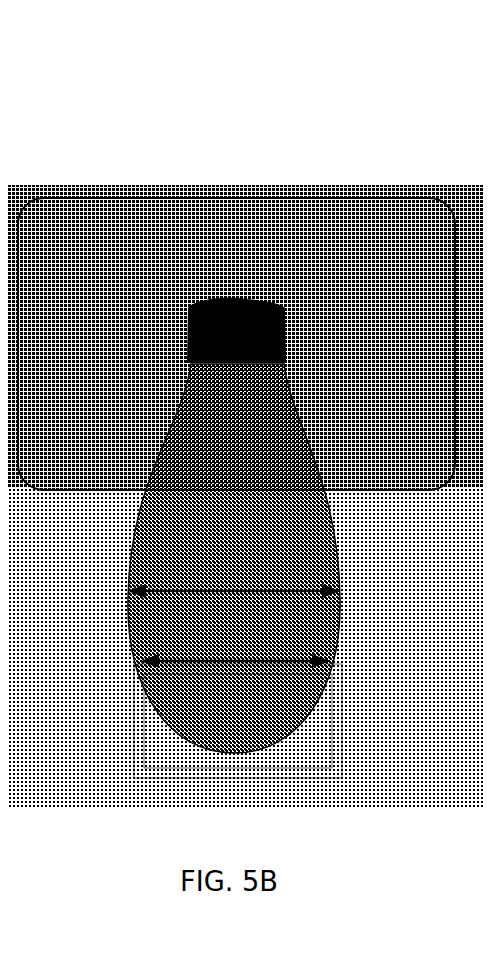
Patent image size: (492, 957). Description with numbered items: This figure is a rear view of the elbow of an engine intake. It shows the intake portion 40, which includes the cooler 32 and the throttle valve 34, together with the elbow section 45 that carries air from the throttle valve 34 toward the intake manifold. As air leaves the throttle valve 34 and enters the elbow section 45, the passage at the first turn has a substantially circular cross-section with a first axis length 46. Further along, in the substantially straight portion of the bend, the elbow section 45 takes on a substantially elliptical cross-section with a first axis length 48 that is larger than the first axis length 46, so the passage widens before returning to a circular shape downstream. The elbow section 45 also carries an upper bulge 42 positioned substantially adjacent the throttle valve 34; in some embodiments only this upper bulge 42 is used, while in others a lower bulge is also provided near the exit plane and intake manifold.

The intake portion 40 is at (273, 178).
The cooler 32 is at (405, 223).
The throttle valve 34 is at (227, 300).
The upper bulge 42 is at (164, 477).
The elbow section 45 is at (372, 566).
The first axis length 46 is at (190, 585).
The first axis length 48 is at (307, 662).